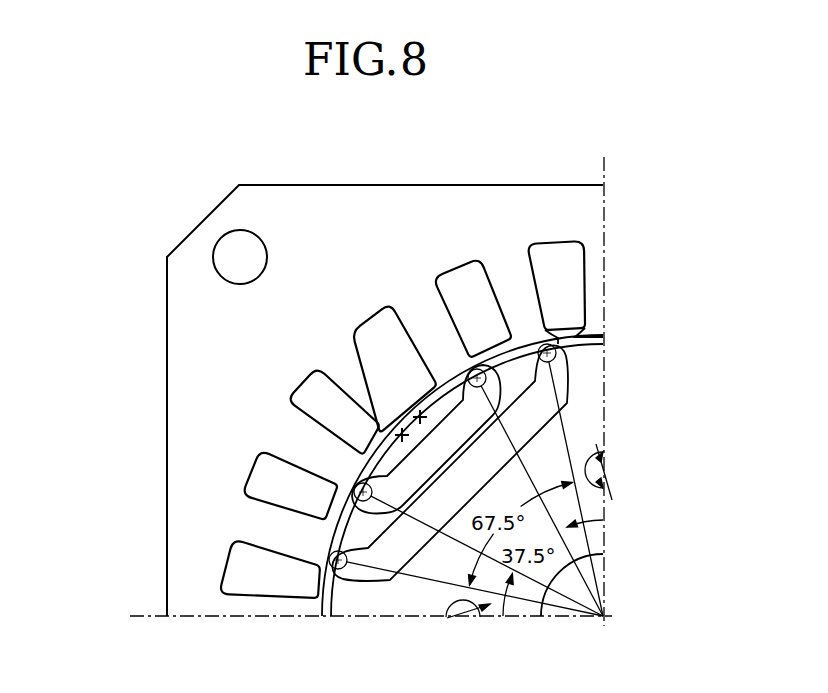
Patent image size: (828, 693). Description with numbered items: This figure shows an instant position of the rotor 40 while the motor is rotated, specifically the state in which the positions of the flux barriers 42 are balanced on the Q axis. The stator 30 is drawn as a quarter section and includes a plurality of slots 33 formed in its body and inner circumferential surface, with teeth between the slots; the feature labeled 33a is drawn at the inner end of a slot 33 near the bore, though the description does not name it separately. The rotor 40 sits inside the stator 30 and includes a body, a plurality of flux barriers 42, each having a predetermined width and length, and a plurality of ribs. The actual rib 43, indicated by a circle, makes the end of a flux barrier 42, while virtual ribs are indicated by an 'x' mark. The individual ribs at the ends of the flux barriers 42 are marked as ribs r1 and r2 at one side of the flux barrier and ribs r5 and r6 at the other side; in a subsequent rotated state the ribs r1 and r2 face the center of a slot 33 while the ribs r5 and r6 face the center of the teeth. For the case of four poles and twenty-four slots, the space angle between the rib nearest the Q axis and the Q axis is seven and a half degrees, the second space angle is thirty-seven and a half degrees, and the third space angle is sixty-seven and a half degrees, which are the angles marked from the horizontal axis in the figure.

The stator 30 is at (548, 173).
The slots 33 is at (568, 273).
The slot opening 33a is at (567, 333).
The rotor 40 is at (371, 613).
The flux barriers 42 is at (397, 482).
The actual rib 43 is at (323, 567).
The rib r1 is at (329, 553).
The rib r2 is at (352, 484).
The rib r5 is at (471, 370).
The rib r6 is at (542, 345).